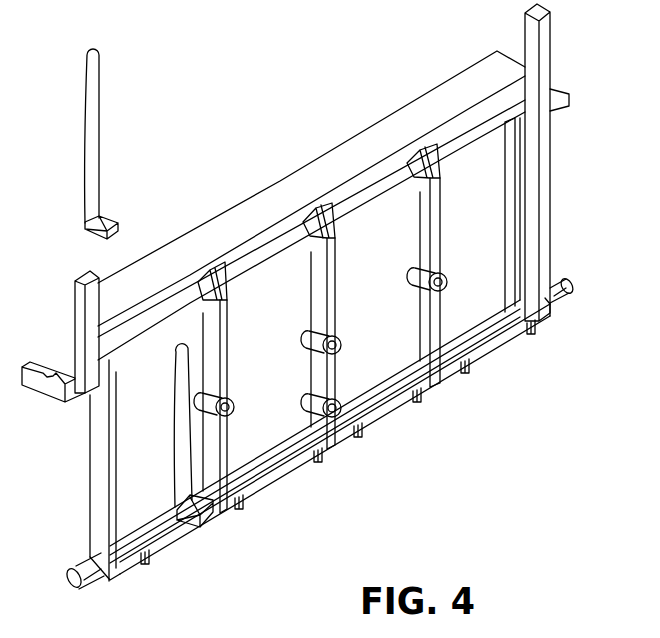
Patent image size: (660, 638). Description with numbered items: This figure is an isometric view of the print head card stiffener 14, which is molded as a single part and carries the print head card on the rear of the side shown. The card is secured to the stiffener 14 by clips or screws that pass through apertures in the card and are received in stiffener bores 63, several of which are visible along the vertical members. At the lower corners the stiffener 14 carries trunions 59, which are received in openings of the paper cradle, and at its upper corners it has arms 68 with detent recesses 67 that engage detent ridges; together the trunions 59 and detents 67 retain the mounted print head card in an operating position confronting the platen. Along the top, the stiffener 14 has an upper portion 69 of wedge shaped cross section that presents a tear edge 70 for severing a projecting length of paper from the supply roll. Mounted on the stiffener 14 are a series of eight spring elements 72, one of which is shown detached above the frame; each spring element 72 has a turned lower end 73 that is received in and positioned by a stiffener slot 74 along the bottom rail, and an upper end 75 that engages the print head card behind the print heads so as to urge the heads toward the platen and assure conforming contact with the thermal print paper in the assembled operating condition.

The print head card stiffener 14 is at (90, 488).
The trunion 59 is at (72, 568).
The stiffener bore 63 is at (236, 405).
The detent recess 67 is at (52, 371).
The arm 68 is at (570, 100).
The upper portion 69 is at (465, 107).
The tear edge 70 is at (342, 136).
The spring element 72 is at (100, 141).
The turned lower end 73 is at (118, 228).
The stiffener slot 74 is at (146, 566).
The upper end 75 is at (100, 69).